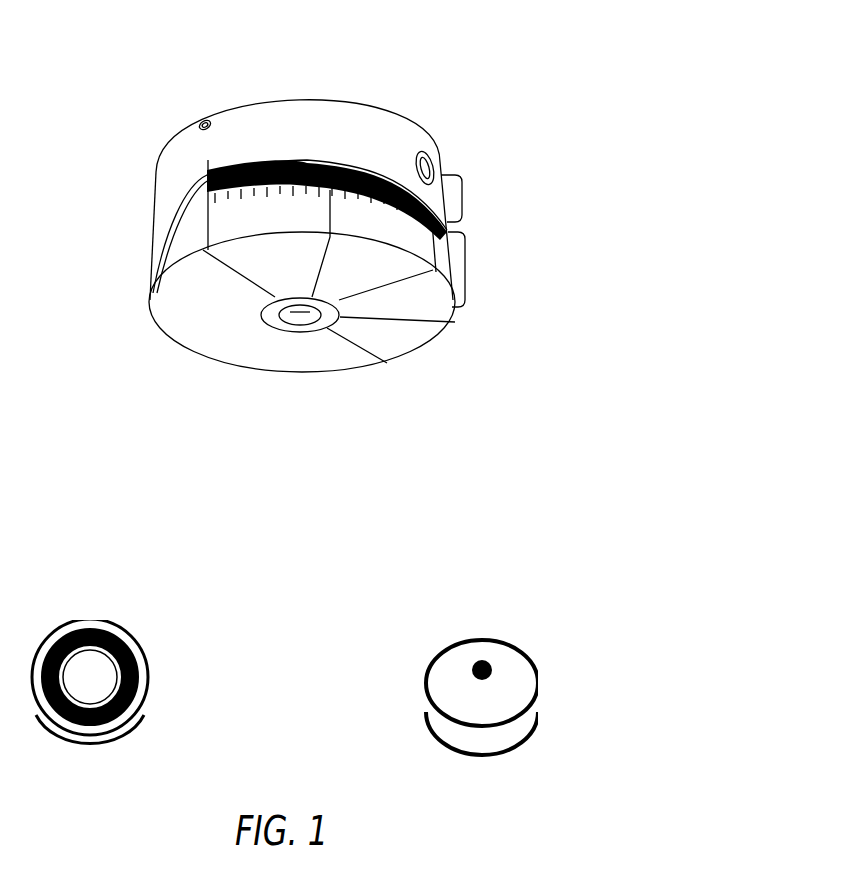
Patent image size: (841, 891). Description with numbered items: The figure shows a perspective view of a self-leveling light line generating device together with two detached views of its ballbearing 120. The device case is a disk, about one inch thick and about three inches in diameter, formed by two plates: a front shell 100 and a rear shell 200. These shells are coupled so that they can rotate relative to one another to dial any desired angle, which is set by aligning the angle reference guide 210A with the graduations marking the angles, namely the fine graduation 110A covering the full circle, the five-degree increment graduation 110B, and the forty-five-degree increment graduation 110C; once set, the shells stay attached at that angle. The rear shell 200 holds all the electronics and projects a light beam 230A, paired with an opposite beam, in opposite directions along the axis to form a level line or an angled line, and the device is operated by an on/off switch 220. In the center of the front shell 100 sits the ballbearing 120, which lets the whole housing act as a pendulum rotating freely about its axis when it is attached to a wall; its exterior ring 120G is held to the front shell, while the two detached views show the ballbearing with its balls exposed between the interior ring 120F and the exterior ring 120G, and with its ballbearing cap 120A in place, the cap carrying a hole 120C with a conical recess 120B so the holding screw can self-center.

The front shell 100 is at (467, 262).
The rear shell 200 is at (464, 185).
The on/off switch 220 is at (423, 150).
The light beam 230A is at (198, 126).
The angle reference guide 210A is at (206, 168).
The fine graduation 110A is at (206, 190).
The 5 degree increment graduation 110B is at (206, 210).
The 45 degree increment graduation 110C is at (340, 263).
The ballbearing 120 is at (537, 602).
The ballbearing cap 120A is at (337, 325).
The conical recess 120B is at (307, 318).
The hole for holding screw 120C is at (300, 318).
The ballbearing's interior ring 120F is at (115, 660).
The ballbearing's exterior ring 120G is at (447, 730).